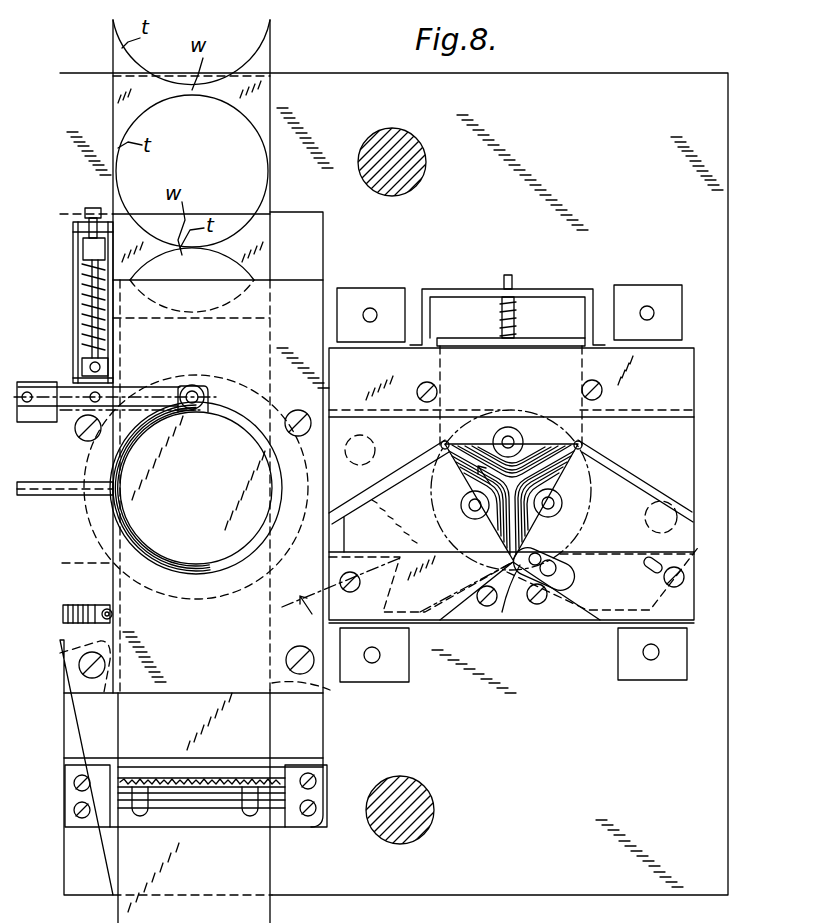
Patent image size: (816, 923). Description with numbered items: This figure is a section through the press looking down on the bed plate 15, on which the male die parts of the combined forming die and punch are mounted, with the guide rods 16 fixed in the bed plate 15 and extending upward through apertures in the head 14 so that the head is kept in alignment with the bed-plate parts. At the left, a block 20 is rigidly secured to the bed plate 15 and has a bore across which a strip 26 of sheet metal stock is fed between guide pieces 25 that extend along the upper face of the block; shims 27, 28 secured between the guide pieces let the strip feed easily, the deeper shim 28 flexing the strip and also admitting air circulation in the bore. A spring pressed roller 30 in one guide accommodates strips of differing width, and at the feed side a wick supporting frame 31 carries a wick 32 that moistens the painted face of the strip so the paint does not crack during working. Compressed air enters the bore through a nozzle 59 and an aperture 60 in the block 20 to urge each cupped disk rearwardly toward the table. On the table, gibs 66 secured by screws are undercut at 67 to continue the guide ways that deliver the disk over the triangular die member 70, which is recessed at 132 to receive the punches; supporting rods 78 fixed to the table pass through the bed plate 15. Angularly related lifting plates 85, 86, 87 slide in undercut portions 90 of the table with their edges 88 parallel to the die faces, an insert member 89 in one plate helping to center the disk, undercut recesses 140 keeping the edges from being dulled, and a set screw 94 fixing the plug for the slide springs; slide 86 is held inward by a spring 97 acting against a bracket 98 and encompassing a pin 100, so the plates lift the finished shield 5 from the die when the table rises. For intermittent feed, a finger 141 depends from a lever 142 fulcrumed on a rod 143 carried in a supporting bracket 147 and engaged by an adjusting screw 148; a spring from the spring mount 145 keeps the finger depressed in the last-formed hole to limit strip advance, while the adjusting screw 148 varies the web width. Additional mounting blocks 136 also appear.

The latch lever 5 is at (580, 574).
The head 14 is at (397, 540).
The bed plate 15 is at (64, 876).
The guide rods 16 is at (418, 162).
The block 20 is at (312, 246).
The guide pieces 25 is at (62, 652).
The strip 26 is at (112, 92).
The shim 27 is at (186, 690).
The shim 28 is at (178, 278).
The spring pressed roller 30 is at (114, 616).
The wick supporting frame 31 is at (220, 804).
The wick 32 is at (176, 790).
The nozzle 59 is at (34, 492).
The aperture 60 is at (72, 526).
The gibs 66 is at (384, 320).
The undercut 67 is at (346, 408).
The triangular die member 70 is at (580, 482).
The supporting rods 78 is at (376, 448).
The lifting plate 85 is at (622, 490).
The lifting plate 86 is at (470, 430).
The lifting plate 87 is at (496, 490).
The edges 88 is at (452, 432).
The insert member 89 is at (520, 614).
The undercut portions 90 is at (598, 360).
The set screw 94 is at (350, 592).
The spring 97 is at (518, 320).
The bracket 98 is at (566, 288).
The pin 100 is at (514, 280).
The recesses 132 is at (508, 436).
The mounting block 136 is at (356, 296).
The undercut recesses 140 is at (514, 436).
The finger 141 is at (196, 386).
The lever 142 is at (134, 390).
The rod 143 is at (82, 330).
The spring mount 145 is at (32, 418).
The supporting bracket 147 is at (74, 276).
The adjusting screw 148 is at (84, 210).